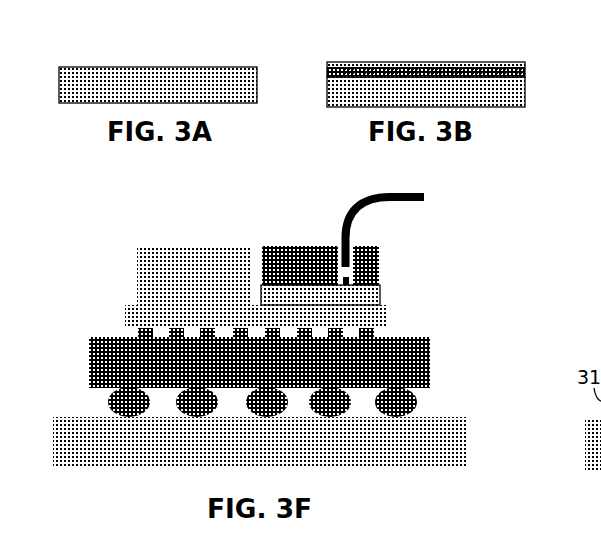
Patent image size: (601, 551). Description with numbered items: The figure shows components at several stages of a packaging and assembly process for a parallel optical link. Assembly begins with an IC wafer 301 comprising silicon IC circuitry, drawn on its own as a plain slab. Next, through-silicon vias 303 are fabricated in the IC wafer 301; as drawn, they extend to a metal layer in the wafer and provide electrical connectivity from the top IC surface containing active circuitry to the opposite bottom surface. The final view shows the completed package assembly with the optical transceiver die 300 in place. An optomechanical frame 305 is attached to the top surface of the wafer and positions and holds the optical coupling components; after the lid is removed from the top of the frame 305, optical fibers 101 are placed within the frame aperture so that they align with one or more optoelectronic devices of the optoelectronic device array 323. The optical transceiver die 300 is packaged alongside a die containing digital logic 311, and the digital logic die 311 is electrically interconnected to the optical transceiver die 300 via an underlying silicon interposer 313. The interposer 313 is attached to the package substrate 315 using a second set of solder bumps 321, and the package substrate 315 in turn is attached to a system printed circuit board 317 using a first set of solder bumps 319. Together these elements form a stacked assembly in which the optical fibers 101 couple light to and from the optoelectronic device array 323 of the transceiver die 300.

In FIG. 3F, the optical fibers 101 is at (424, 197).
In FIG. 3F, the optical transceiver die 300 is at (428, 265).
In FIG. 3A, the IC wafer 301 is at (59, 85).
In FIG. 3B, the IC wafer 301 is at (327, 70).
In FIG. 3B, the through-silicon vias 303 is at (343, 60).
In FIG. 3F, the optomechanical frame 305 is at (313, 278).
In FIG. 3F, the digital logic die 311 is at (211, 286).
In FIG. 3F, the silicon interposer 313 is at (272, 326).
In FIG. 3F, the package substrate 315 is at (259, 362).
In FIG. 3F, the system printed circuit board 317 is at (277, 450).
In FIG. 3F, the first set of solder bumps 319 is at (108, 403).
In FIG. 3F, the second set of solder bumps 321 is at (137, 333).
In FIG. 3F, the optoelectronic device array 323 is at (350, 281).